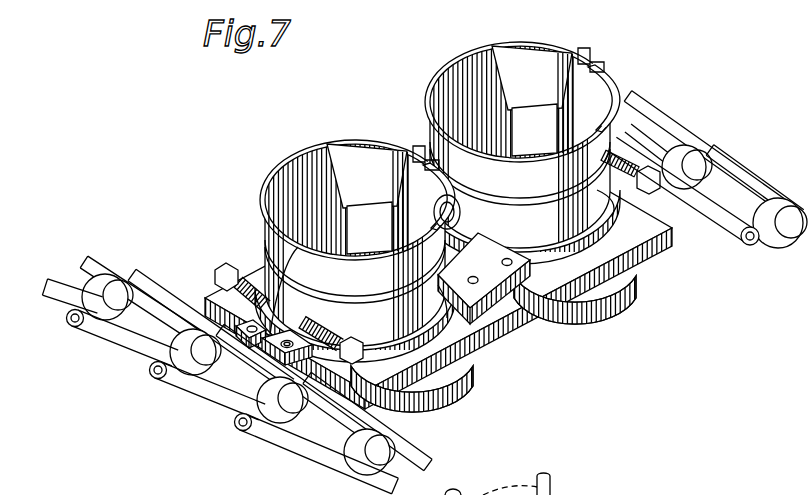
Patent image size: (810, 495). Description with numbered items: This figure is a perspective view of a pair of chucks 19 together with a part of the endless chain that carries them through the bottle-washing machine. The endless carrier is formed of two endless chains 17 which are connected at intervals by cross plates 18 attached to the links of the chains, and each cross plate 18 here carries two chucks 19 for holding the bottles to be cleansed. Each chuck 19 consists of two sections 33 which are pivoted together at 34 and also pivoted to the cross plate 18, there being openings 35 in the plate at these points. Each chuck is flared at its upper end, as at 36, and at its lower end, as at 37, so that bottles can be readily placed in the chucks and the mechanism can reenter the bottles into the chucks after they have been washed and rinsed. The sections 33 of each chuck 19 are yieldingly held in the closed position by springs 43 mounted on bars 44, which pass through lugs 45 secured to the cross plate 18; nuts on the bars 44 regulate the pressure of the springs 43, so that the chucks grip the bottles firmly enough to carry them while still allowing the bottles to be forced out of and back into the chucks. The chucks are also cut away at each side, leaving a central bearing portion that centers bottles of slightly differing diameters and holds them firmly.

The endless chains 17 is at (756, 169).
The cross plate 18 is at (438, 272).
The chuck 19 is at (538, 45).
The sections 33 is at (452, 217).
The pivot 34 is at (453, 152).
The openings 35 is at (445, 308).
The flared upper end 36 is at (445, 163).
The flared lower end 37 is at (597, 309).
The springs 43 is at (430, 250).
The bars 44 is at (236, 258).
The lugs 45 is at (250, 325).